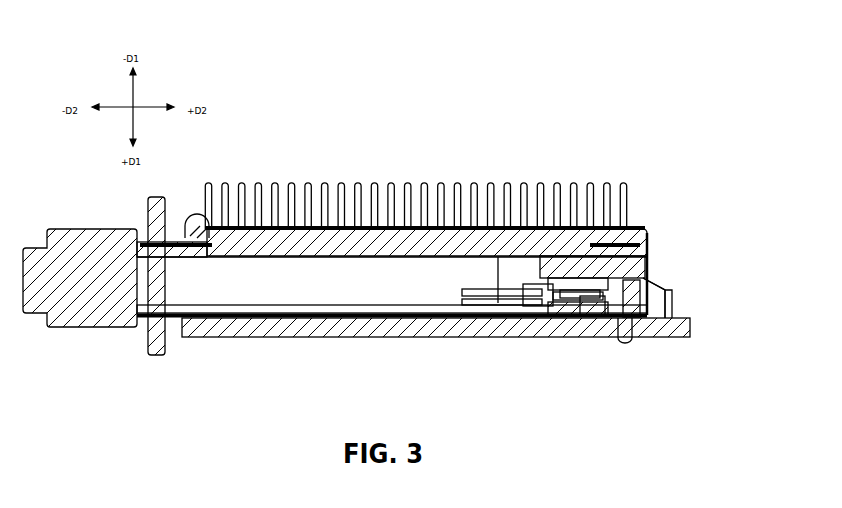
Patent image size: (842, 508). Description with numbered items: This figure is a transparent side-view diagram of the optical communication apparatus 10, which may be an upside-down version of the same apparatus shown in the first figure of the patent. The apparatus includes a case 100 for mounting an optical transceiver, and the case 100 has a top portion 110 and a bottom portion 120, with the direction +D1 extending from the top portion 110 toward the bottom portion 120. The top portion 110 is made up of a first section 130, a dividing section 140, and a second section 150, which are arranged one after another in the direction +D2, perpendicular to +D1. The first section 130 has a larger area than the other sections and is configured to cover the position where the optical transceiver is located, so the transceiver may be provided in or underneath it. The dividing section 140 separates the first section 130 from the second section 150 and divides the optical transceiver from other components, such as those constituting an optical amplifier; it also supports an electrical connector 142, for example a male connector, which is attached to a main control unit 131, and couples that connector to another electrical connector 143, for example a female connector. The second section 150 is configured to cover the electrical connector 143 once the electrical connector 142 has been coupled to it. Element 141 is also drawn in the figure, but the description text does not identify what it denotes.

The optical communication apparatus 10 is at (75, 50).
The case 100 is at (680, 247).
The top portion 110 is at (650, 78).
The bottom portion 120 is at (350, 310).
The first section 130 is at (337, 278).
The main control unit 131 is at (477, 313).
The dividing section 140 is at (552, 250).
The optical component 141 is at (547, 280).
The electrical connector 142 is at (578, 300).
The electrical connector 143 is at (623, 336).
The second section 150 is at (588, 247).